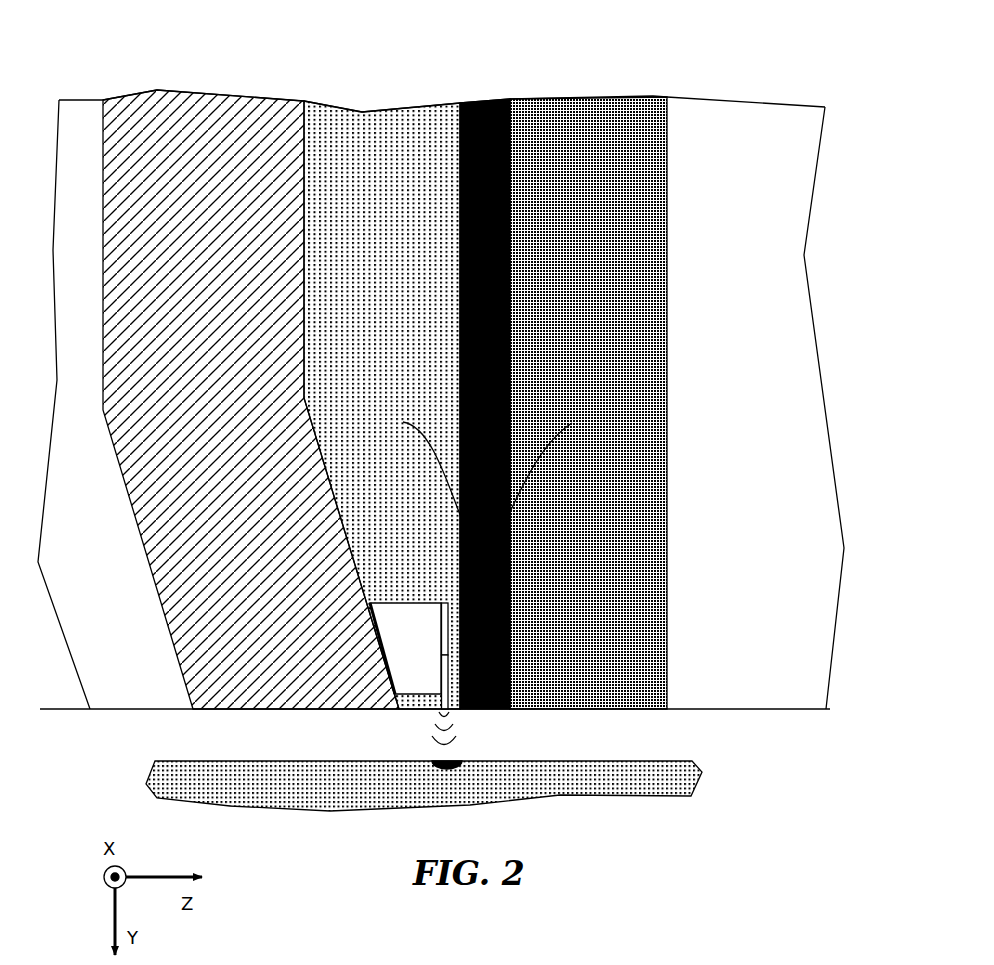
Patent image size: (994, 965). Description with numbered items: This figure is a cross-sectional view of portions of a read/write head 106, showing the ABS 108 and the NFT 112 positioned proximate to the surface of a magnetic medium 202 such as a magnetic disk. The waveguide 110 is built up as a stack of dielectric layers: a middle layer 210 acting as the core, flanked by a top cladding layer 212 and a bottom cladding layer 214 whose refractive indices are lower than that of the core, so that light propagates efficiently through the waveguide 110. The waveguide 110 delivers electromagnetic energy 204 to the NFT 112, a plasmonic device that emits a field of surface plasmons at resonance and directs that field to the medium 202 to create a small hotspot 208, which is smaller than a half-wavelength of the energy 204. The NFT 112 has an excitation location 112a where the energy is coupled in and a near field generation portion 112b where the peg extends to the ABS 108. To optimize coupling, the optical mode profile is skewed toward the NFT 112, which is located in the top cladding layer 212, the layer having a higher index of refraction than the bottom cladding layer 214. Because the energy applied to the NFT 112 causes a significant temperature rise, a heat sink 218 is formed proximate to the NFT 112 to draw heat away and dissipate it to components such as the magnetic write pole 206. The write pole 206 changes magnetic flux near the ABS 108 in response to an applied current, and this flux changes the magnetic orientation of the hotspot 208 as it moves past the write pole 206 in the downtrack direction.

The read/write head 106 is at (736, 36).
The waveguide 110 is at (485, 367).
The top cladding layer 212 is at (363, 110).
The middle layer 210 is at (480, 100).
The bottom cladding layer 214 is at (588, 393).
The magnetic write pole 206 is at (250, 95).
The heat sink 218 is at (422, 685).
The excitation location 112a is at (452, 617).
The near field generation portion 112b is at (448, 688).
The electromagnetic energy 204 is at (540, 440).
The ABS 108 is at (57, 711).
The NFT 112 is at (446, 714).
The magnetic medium 202 is at (208, 782).
The hotspot 208 is at (447, 769).